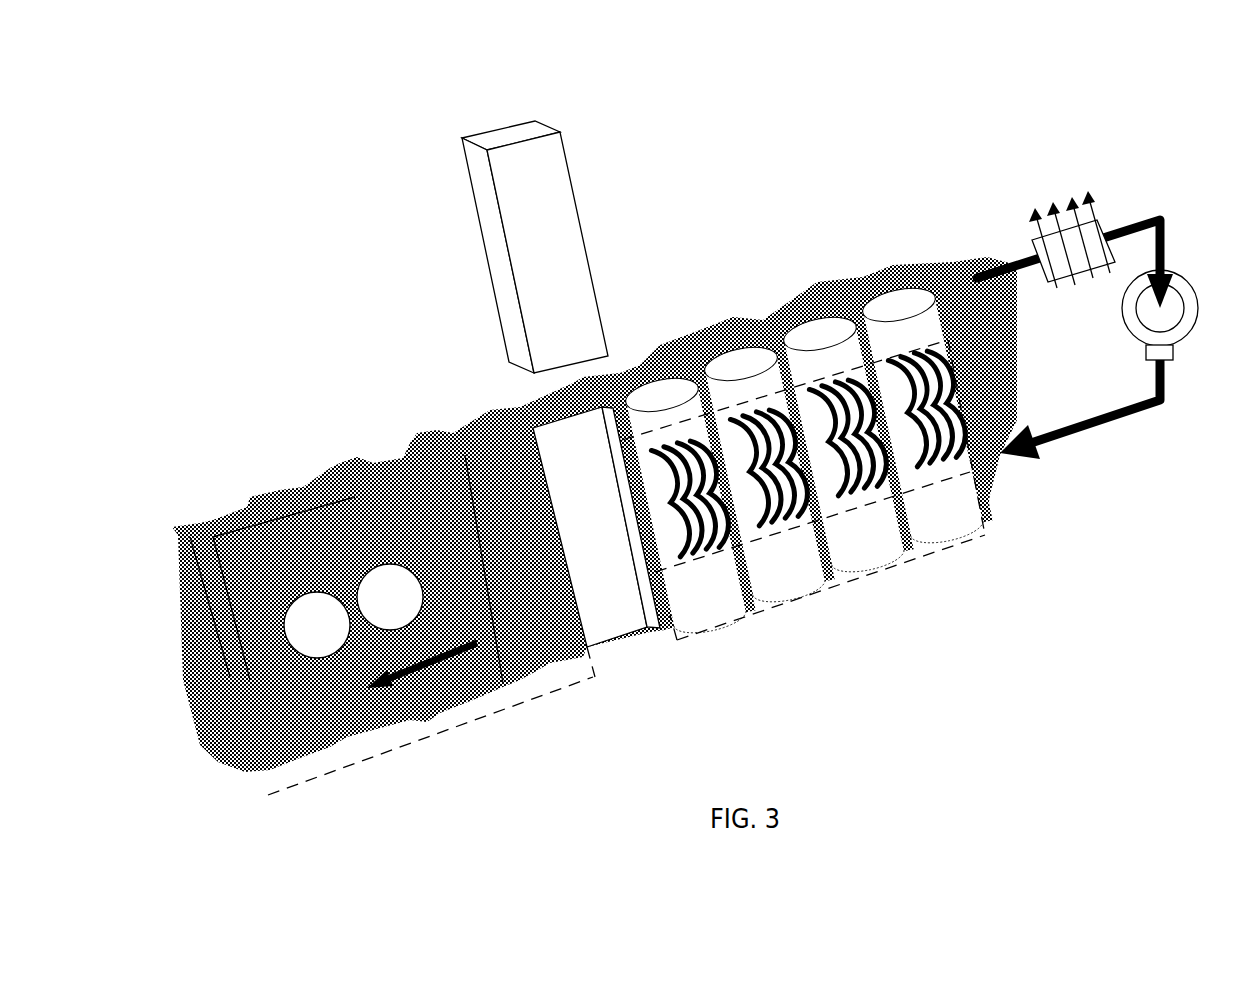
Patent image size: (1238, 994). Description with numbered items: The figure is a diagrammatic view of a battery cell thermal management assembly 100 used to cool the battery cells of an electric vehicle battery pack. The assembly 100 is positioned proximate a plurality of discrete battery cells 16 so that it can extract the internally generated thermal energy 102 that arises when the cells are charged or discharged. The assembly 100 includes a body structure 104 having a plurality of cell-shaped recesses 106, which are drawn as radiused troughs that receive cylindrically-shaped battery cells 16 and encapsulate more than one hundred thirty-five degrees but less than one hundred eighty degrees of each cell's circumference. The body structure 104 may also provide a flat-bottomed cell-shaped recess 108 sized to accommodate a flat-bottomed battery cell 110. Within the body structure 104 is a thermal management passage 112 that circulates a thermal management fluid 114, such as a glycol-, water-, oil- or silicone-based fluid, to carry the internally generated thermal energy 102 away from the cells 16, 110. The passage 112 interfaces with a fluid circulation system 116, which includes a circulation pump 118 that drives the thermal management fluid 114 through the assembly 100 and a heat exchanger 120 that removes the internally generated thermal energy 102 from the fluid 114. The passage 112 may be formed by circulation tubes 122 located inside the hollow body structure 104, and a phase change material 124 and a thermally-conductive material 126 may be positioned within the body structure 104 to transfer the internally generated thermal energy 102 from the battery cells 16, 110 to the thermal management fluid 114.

The battery cell thermal management assembly 100 is at (218, 320).
The battery cells 16 is at (837, 600).
The internally generated thermal energy 102 is at (927, 485).
The body structure 104 is at (748, 330).
The cell-shaped recesses 106 is at (383, 582).
The cell-shaped recess 108 is at (617, 618).
The battery cell 110 is at (514, 122).
The thermal management passage 112 is at (965, 283).
The thermal management fluid 114 is at (422, 667).
The fluid circulation system 116 is at (1087, 283).
The circulation pump 118 is at (1173, 335).
The heat exchanger 120 is at (1053, 207).
The circulation tubes 122 is at (351, 510).
The phase change material 124 is at (317, 625).
The thermally-conductive material 126 is at (390, 597).